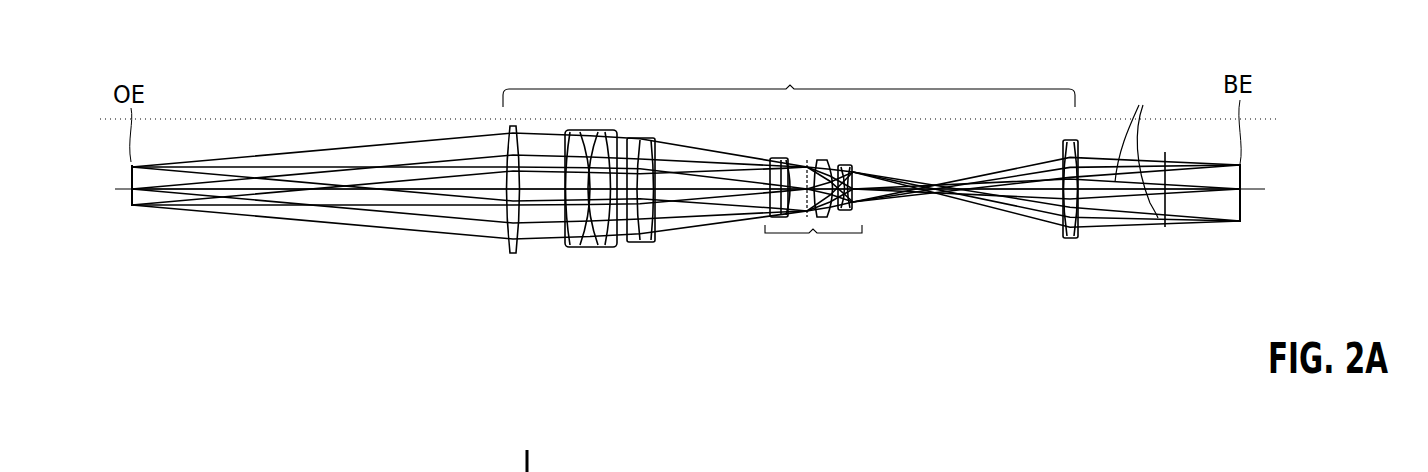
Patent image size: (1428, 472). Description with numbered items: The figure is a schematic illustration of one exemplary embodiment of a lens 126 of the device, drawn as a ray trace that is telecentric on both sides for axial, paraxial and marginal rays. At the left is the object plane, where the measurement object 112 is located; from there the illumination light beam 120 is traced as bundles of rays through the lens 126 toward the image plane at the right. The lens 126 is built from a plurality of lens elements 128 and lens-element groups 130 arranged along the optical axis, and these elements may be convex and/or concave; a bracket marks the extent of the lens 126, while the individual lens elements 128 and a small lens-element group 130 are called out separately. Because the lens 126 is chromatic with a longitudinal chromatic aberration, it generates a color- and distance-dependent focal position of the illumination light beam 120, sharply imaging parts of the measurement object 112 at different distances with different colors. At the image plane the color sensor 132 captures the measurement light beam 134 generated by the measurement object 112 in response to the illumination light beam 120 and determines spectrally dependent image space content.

The measurement object 112 is at (132, 206).
The illumination light beam 120 is at (340, 146).
The lens 126 is at (790, 85).
The lens elements 128 is at (722, 302).
The lens-element groups 130 is at (813, 233).
The color sensor 132 is at (1240, 222).
The measurement light beam 134 is at (1140, 150).